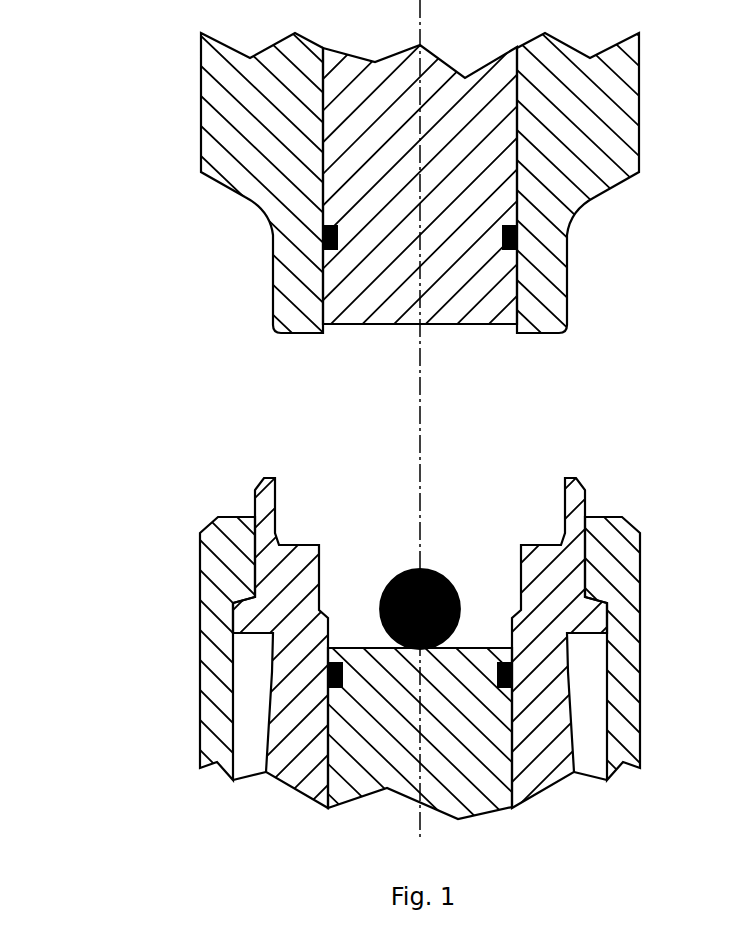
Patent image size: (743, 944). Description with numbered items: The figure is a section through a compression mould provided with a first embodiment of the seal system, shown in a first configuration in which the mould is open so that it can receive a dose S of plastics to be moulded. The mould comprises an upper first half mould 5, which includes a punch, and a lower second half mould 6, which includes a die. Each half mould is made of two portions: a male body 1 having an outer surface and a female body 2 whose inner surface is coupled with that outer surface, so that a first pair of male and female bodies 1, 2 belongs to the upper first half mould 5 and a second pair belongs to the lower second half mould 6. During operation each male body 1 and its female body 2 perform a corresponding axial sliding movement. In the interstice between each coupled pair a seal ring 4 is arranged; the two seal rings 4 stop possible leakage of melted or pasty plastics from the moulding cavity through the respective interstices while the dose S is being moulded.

The male body 1 is at (345, 288).
The female body 2 is at (220, 98).
The seal ring 4 is at (517, 243).
The upper first half mould 5 is at (497, 386).
The lower second half mould 6 is at (233, 438).
The dose of plastics S is at (393, 578).